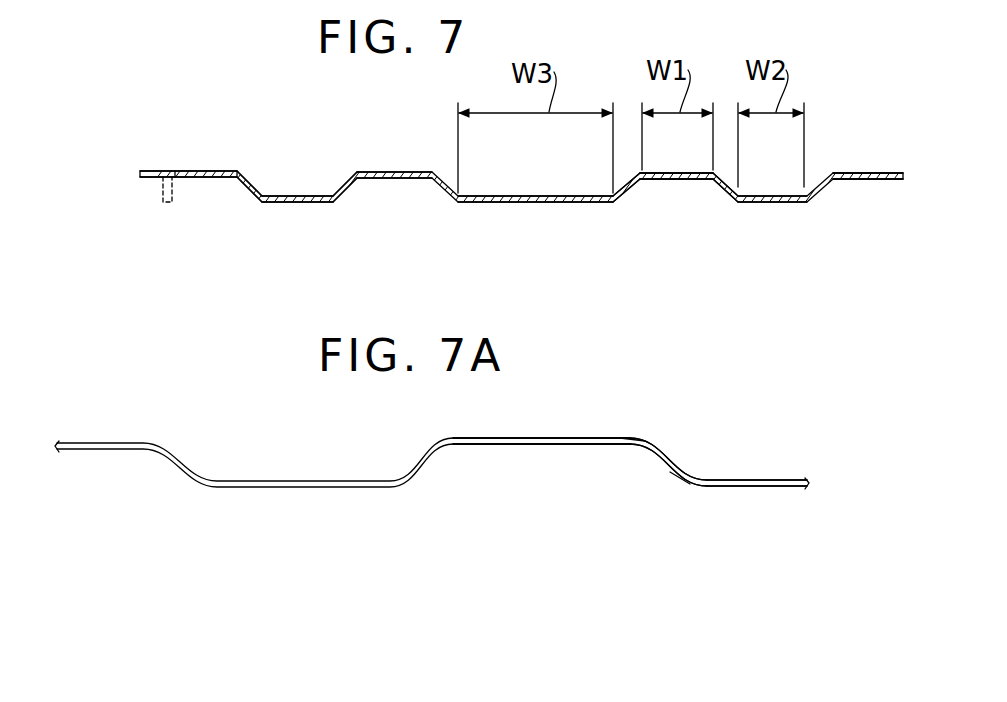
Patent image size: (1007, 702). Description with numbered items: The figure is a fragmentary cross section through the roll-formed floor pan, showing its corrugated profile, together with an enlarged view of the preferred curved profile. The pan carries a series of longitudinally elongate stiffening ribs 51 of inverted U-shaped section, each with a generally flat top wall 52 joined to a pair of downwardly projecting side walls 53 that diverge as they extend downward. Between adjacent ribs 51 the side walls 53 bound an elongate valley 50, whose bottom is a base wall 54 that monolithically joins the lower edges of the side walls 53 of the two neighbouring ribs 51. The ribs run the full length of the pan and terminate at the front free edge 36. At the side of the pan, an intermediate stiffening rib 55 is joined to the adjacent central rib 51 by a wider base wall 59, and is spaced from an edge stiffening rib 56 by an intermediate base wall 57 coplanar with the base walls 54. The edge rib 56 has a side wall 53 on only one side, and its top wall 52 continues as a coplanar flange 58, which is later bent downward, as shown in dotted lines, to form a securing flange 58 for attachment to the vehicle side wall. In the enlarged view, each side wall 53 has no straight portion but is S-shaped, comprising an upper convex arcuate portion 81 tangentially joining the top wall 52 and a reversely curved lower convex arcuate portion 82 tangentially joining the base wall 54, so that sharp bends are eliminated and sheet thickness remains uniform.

In FIG. 7, the front free edge 36 is at (167, 170).
In FIG. 7, the valley 50 is at (772, 192).
In FIG. 7, the stiffening rib 51 is at (660, 175).
In FIG. 7A, the stiffening rib 51 is at (588, 436).
In FIG. 7, the top wall 52 is at (205, 170).
In FIG. 7A, the top wall 52 is at (540, 437).
In FIG. 7, the side wall 53 is at (249, 184).
In FIG. 7A, the side wall 53 is at (655, 460).
In FIG. 7, the base wall 54 is at (763, 191).
In FIG. 7A, the base wall 54 is at (749, 478).
In FIG. 7, the intermediate stiffening rib 55 is at (396, 169).
In FIG. 7, the edge stiffening rib 56 is at (187, 167).
In FIG. 7, the intermediate base wall 57 is at (289, 194).
In FIG. 7, the flange 58 is at (152, 177).
In FIG. 7, the base wall 59 is at (500, 188).
In FIG. 7A, the upper portion 81 is at (636, 439).
In FIG. 7A, the lower portion 82 is at (683, 477).